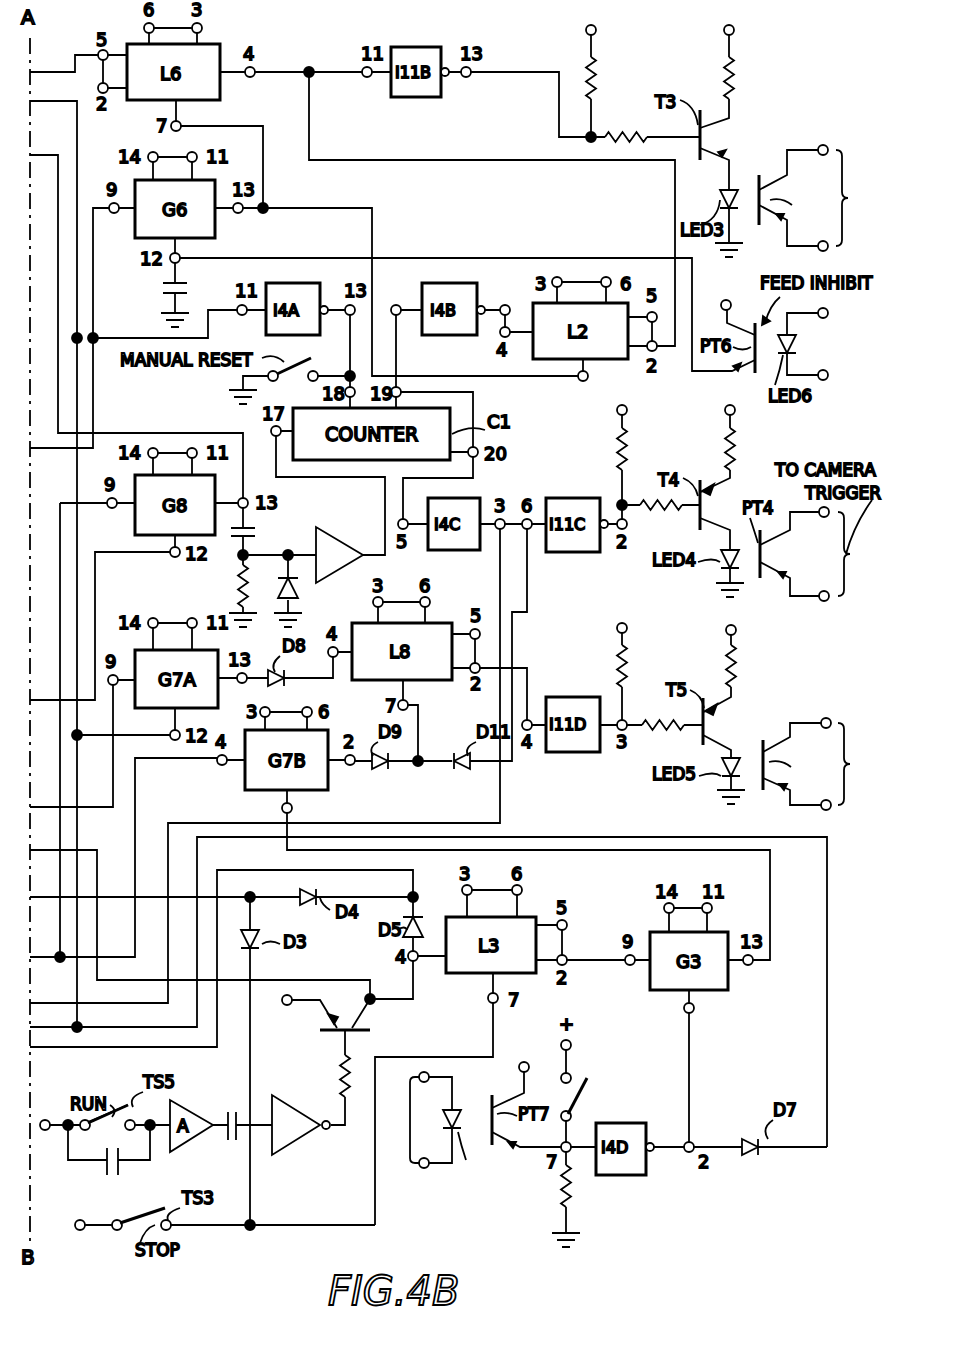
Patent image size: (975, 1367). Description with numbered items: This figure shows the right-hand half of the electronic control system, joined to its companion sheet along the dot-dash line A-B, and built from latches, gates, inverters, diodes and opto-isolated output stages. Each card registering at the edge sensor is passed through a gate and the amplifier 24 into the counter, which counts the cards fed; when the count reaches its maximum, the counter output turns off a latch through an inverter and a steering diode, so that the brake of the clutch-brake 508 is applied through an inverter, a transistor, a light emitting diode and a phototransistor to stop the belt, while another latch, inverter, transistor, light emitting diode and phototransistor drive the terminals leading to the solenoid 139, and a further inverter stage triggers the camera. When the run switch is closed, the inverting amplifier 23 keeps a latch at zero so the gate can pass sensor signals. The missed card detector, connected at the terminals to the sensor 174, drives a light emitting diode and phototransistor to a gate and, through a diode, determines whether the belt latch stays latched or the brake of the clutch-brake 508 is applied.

The solenoid 139 is at (848, 198).
The clutch-brake 508 is at (846, 764).
The sensor 174 is at (410, 1118).
The amplifier A24 24 is at (352, 543).
The inverting amplifier IA23 23 is at (307, 1140).